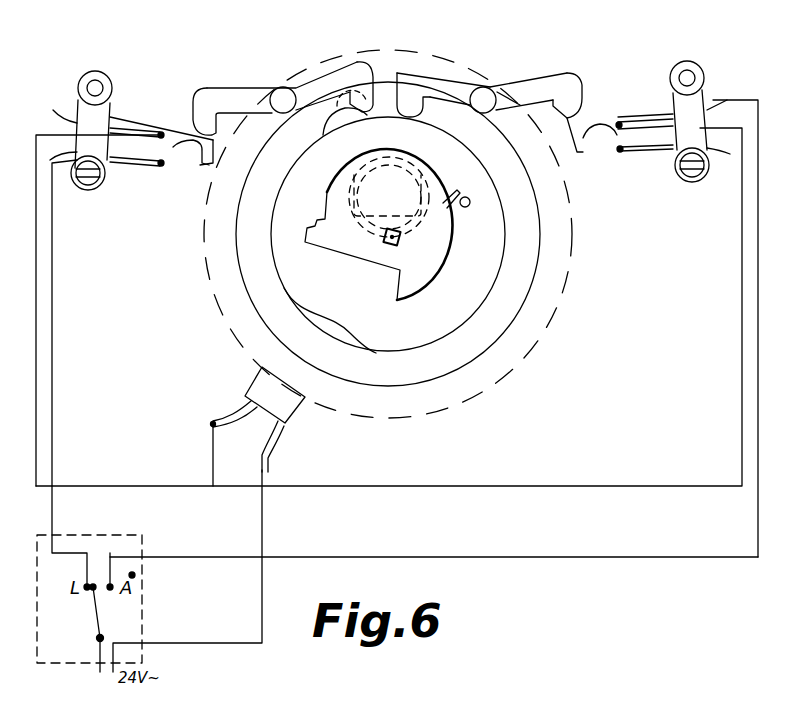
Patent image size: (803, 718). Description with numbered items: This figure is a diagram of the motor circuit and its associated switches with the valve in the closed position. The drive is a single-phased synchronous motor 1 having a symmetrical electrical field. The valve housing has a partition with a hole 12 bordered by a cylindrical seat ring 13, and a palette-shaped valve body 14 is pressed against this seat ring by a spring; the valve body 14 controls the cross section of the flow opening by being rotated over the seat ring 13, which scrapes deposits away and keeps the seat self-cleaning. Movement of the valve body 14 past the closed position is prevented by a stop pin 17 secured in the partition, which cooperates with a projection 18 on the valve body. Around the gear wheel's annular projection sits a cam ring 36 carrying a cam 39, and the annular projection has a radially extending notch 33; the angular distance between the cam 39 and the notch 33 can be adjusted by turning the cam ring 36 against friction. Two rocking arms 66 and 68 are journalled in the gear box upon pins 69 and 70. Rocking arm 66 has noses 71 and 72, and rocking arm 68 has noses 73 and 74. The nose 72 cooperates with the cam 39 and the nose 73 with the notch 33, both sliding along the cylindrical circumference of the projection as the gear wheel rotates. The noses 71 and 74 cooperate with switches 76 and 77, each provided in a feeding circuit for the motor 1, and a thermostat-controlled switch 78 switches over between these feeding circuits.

The single-phased synchronous motor 1 is at (350, 400).
The hole 12 is at (383, 180).
The cylindrical seat ring 13 is at (344, 192).
The valve body 14 is at (327, 233).
The stop pin 17 is at (469, 207).
The projection 18 is at (467, 180).
The radially extending notch 33 is at (323, 322).
The cam ring 36 is at (517, 290).
The cam 39 is at (340, 120).
The rocking arm 66 is at (247, 100).
The rocking arm 68 is at (532, 90).
The pin 69 is at (283, 97).
The pin 70 is at (490, 87).
The nose 71 is at (203, 128).
The nose 72 is at (377, 110).
The nose 73 is at (410, 100).
The nose 74 is at (572, 106).
The switch 76 is at (85, 115).
The switch 77 is at (692, 112).
The switch 78 is at (140, 612).